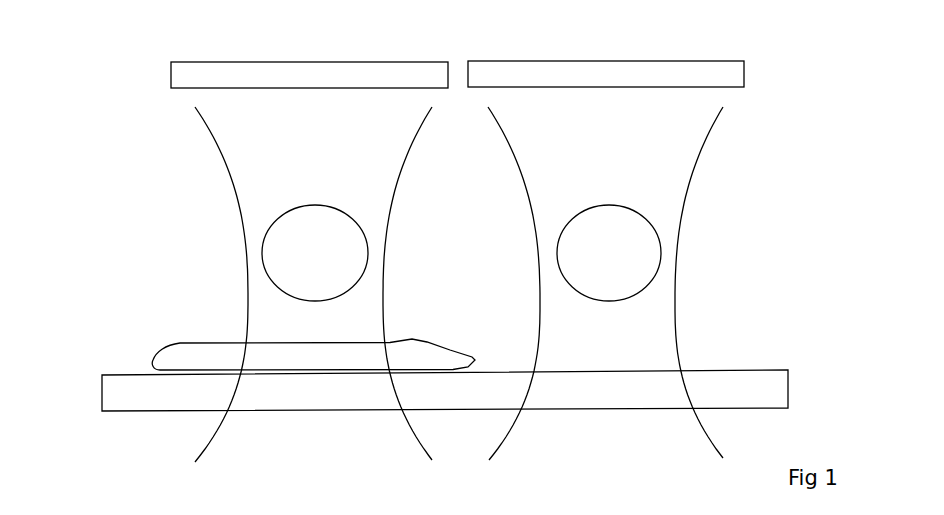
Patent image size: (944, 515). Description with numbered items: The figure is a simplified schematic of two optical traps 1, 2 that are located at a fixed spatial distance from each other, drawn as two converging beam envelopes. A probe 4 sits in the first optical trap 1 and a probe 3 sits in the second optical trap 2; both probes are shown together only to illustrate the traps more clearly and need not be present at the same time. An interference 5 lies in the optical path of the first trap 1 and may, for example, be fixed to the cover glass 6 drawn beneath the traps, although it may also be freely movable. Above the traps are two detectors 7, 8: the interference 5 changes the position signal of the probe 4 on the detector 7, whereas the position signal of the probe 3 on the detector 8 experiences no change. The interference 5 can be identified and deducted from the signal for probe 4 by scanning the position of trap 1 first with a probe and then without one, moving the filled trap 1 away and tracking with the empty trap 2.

The optical trap 1 is at (238, 171).
The optical trap 2 is at (665, 338).
The probe 3 is at (565, 252).
The probe 4 is at (272, 253).
The interference 5 is at (172, 356).
The cover glass 6 is at (118, 389).
The detector 7 is at (190, 76).
The detector 8 is at (720, 76).